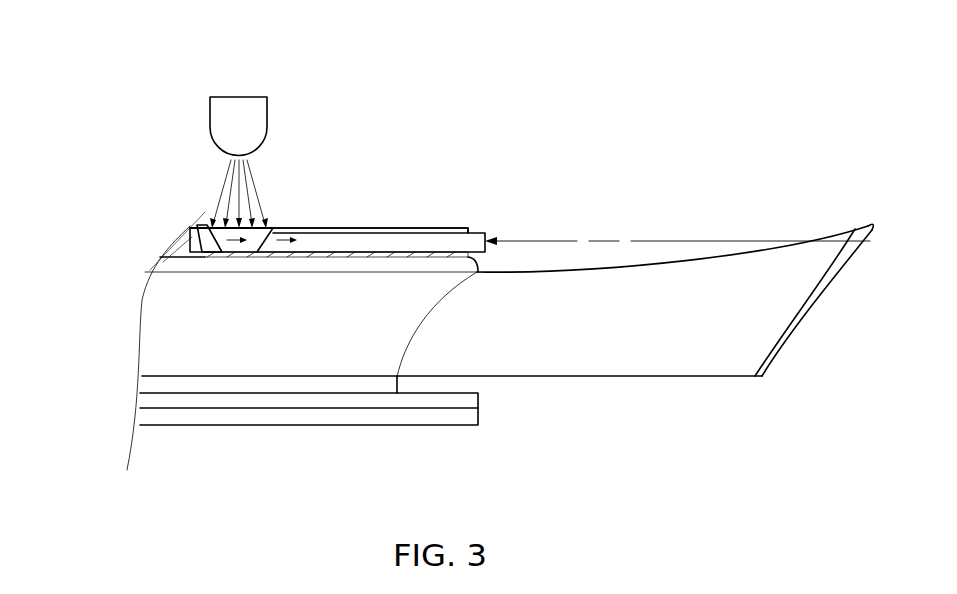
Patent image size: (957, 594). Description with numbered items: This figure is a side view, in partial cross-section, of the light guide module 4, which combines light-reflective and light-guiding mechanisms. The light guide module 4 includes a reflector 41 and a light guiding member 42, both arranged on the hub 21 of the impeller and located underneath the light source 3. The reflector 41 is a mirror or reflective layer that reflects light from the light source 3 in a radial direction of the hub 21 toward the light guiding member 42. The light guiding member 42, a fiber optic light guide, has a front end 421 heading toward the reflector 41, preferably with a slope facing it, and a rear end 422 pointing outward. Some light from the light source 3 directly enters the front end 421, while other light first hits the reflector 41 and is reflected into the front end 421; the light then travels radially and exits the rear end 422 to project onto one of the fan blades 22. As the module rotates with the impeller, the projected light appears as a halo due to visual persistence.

The light source 3 is at (260, 113).
The light guide module 4 is at (226, 323).
The reflector 41 is at (210, 253).
The light guiding member 42 is at (329, 246).
The front end 421 is at (271, 228).
The rear end 422 is at (487, 233).
The hub 21 is at (158, 322).
The fan blade 22 is at (663, 347).